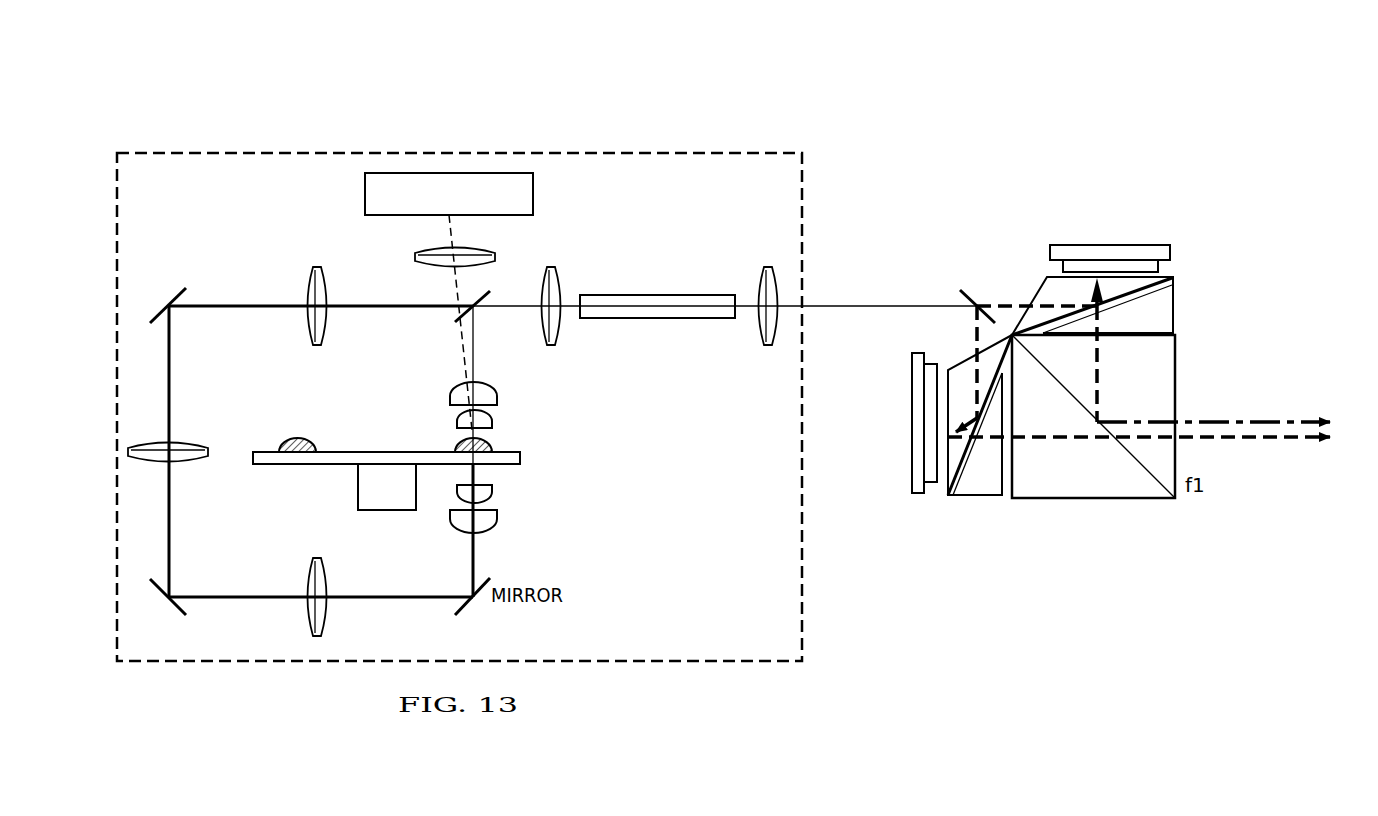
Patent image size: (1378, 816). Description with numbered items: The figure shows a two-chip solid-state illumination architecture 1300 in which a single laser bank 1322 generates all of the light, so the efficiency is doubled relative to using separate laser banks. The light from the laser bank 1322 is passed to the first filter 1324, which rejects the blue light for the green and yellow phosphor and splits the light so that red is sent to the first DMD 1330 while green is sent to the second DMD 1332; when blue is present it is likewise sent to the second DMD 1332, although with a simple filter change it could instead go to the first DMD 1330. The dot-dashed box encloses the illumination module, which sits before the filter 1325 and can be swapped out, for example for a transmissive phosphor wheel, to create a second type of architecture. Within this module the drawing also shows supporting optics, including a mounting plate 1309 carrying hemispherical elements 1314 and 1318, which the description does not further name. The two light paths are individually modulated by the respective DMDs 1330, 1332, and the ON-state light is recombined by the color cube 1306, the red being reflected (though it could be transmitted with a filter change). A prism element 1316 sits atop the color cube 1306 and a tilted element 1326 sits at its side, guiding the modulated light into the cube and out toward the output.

The architecture 1300 is at (960, 119).
The color cube 1306 is at (1175, 383).
The mounting plate 1309 is at (298, 464).
The hemispherical lens 1314 is at (462, 440).
The prism 1316 is at (1042, 280).
The hemispherical lens 1318 is at (297, 441).
The laser bank 1322 is at (365, 196).
The first filter 1324 is at (472, 304).
The filter 1325 is at (993, 283).
The tilted prism 1326 is at (956, 360).
The first DMD 1330 is at (1112, 245).
The second DMD 1332 is at (910, 428).